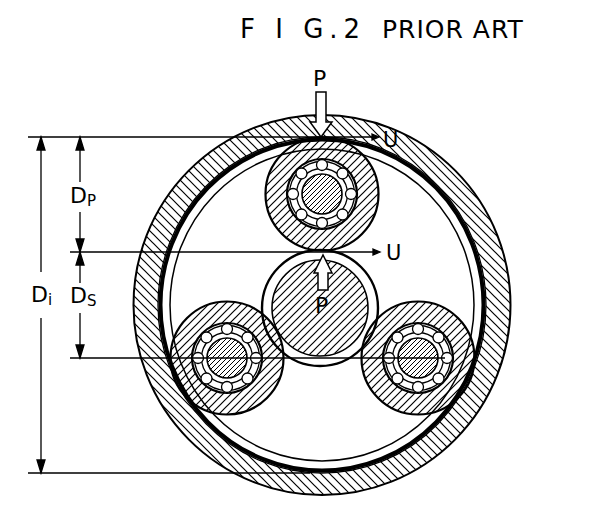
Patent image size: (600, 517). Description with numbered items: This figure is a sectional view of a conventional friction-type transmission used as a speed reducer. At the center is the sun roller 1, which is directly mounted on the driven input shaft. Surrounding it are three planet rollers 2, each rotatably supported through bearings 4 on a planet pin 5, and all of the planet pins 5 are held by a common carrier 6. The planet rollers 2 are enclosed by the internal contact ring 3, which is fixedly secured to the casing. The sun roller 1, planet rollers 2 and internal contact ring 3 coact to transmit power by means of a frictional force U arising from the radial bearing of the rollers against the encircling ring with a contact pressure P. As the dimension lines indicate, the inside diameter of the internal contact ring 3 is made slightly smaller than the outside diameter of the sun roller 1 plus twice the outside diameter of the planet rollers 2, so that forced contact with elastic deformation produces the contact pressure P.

The sun roller 1 is at (375, 290).
The planet rollers 2 is at (262, 207).
The internal contact ring 3 is at (477, 228).
The bearings 4 is at (310, 170).
The planet pins 5 is at (292, 180).
The carrier 6 is at (413, 198).